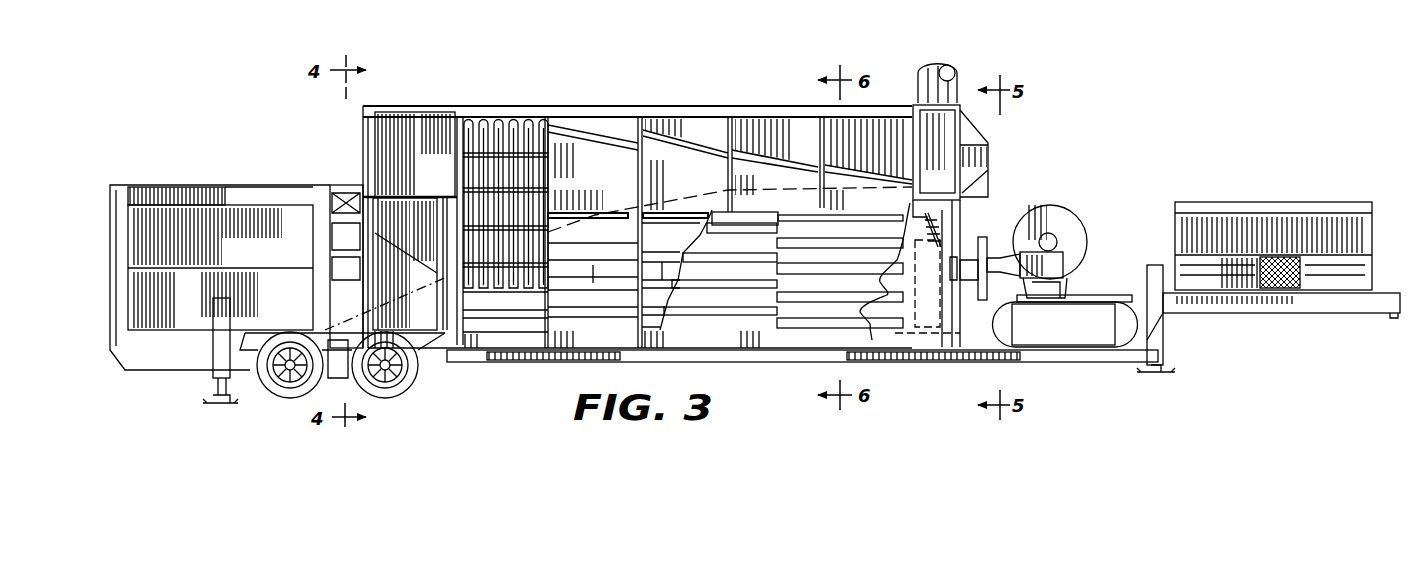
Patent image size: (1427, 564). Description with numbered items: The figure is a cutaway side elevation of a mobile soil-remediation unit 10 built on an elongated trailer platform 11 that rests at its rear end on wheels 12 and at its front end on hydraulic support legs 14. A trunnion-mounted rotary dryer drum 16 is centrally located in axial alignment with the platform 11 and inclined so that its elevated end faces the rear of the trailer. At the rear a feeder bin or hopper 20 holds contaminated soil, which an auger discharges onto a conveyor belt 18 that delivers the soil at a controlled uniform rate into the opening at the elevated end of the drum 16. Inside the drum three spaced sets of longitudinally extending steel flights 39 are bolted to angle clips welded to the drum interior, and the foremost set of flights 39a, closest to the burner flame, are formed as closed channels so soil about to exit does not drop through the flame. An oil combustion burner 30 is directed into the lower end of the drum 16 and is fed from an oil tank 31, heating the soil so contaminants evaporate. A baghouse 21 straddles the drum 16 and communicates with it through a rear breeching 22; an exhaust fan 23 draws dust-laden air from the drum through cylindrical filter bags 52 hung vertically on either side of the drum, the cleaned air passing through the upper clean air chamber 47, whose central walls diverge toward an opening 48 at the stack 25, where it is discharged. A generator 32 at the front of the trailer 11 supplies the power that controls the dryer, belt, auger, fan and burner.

The unit 10 is at (522, 58).
The trailer platform 11 is at (1328, 305).
The wheels 12 is at (288, 392).
The hydraulic support legs 14 is at (1168, 364).
The rotary dryer drum 16 is at (897, 328).
The conveyor belt 18 is at (362, 307).
The feeder bin or hopper 20 is at (187, 225).
The baghouse 21 is at (602, 110).
The rear breeching 22 is at (392, 195).
The exhaust fan 23 is at (987, 158).
The stack 25 is at (950, 88).
The oil combustion burner 30 is at (1062, 215).
The oil tank 31 is at (1082, 337).
The generator 32 is at (1272, 202).
The flights 39 is at (717, 278).
The foremost set of flights 39a is at (893, 271).
The clean air chamber 47 is at (762, 122).
The opening 48 is at (668, 165).
The filter bags 52 is at (545, 160).